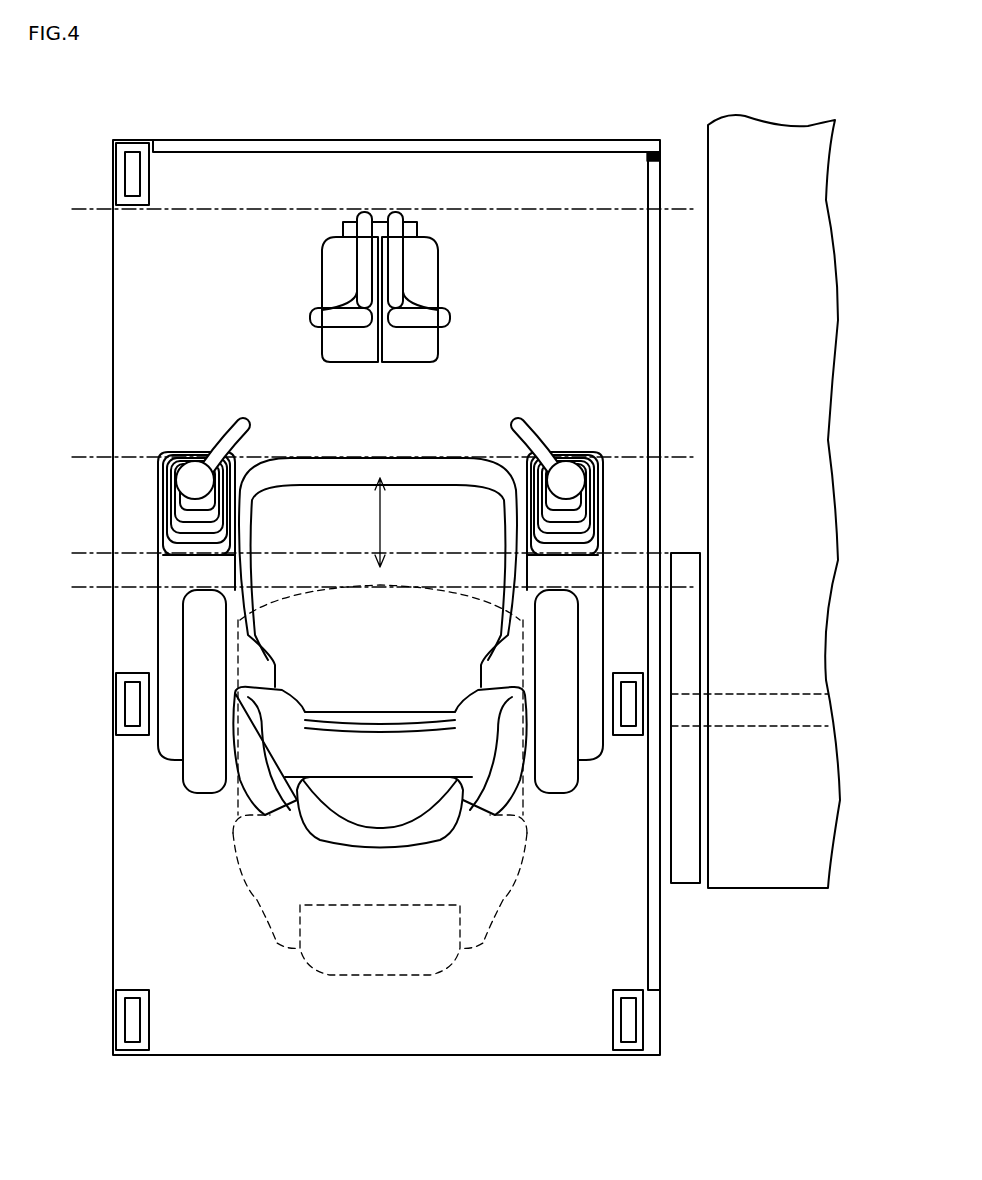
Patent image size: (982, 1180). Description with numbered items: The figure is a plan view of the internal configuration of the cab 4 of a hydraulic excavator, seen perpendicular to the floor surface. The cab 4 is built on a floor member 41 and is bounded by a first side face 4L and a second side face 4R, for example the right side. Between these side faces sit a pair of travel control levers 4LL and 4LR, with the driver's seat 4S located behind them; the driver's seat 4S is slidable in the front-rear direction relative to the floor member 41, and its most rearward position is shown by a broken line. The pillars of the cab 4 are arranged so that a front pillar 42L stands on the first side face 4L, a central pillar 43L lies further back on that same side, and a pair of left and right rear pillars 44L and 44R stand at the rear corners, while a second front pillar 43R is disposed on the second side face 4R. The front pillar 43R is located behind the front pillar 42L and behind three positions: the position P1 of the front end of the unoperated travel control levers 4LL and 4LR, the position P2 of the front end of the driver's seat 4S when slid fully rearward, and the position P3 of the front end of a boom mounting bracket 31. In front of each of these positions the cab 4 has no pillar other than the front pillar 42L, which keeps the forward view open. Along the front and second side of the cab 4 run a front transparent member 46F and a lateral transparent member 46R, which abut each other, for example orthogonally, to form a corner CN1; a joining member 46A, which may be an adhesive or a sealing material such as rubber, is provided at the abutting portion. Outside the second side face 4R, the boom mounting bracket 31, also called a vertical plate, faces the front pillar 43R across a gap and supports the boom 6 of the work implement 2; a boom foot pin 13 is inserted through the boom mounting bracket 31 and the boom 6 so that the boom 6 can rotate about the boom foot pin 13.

The work implement 2 is at (809, 118).
The cab 4 is at (325, 1078).
The first side face 4L is at (113, 356).
The second side face 4R is at (662, 338).
The driver's seat 4S is at (297, 748).
The travel control lever 4LL is at (333, 317).
The travel control lever 4LR is at (425, 317).
The boom 6 is at (768, 148).
The boom foot pin 13 is at (800, 728).
The boom mounting bracket 31 is at (686, 646).
The floor member 41 is at (152, 313).
The front pillar 42L is at (118, 174).
The central pillar 43L is at (118, 702).
The front pillar 43R is at (626, 737).
The rear pillar 44L is at (118, 1030).
The rear pillar 44R is at (652, 1025).
The front transparent member 46F is at (384, 144).
The lateral transparent member 46R is at (655, 183).
The joining member 46A is at (640, 158).
The corner CN1 is at (655, 150).
The position of the front end of the travel control levers P1 is at (366, 209).
The position of the front end of the driver's seat P2 is at (366, 587).
The position of the front end of the boom mounting bracket P3 is at (366, 553).